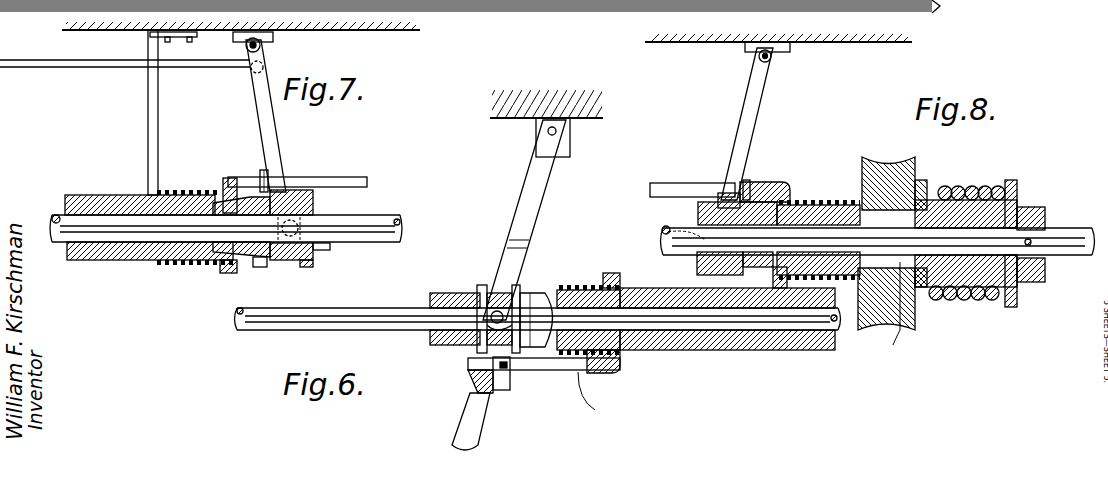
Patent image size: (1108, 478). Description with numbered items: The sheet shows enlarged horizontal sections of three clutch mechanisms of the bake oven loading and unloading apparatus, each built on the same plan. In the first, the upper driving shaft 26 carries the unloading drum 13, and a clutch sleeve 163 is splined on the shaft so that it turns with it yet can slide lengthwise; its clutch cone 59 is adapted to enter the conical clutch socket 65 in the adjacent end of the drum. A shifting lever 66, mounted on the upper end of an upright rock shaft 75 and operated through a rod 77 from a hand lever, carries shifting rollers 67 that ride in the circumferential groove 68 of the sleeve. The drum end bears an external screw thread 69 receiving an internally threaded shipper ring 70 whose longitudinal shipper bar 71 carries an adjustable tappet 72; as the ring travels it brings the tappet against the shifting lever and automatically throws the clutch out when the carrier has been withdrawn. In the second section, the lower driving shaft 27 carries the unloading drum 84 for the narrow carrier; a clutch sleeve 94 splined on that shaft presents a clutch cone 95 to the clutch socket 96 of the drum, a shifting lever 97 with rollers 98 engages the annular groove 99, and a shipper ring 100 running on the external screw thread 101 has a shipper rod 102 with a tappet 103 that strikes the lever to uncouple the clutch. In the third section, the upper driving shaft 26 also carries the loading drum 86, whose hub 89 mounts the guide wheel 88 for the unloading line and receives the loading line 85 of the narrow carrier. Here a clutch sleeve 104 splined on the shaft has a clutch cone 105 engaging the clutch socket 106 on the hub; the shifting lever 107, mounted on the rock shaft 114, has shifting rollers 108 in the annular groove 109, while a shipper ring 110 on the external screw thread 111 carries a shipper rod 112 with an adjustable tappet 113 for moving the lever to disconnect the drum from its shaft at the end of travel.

In FIG. 7, the rod 77 is at (125, 112).
In FIG. 7, the upright rock shaft 75 is at (262, 48).
In FIG. 7, the shifting lever 66 is at (278, 130).
In FIG. 7, the tappet 72 is at (262, 172).
In FIG. 7, the shipper bar 71 is at (368, 183).
In FIG. 7, the unloading drum 13 is at (76, 195).
In FIG. 7, the conical clutch socket 65 is at (213, 210).
In FIG. 7, the circumferential groove 68 is at (296, 198).
In FIG. 7, the clutch sleeve 163 is at (314, 258).
In FIG. 7, the external screw thread 69 is at (178, 265).
In FIG. 7, the shipper ring 70 is at (224, 275).
In FIG. 7, the clutch cone 59 is at (258, 268).
In FIG. 7, the shifting rollers 67 is at (300, 228).
In FIG. 7, the upper driving shaft 26 is at (238, 229).
In FIG. 8, the upper driving shaft 26 is at (663, 229).
In FIG. 6, the shifting lever 97 is at (527, 198).
In FIG. 6, the rollers 98 is at (475, 310).
In FIG. 6, the clutch sleeve 94 is at (480, 292).
In FIG. 6, the annular groove 99 is at (499, 308).
In FIG. 6, the clutch cone 95 is at (549, 296).
In FIG. 6, the clutch socket 96 is at (580, 295).
In FIG. 6, the unloading drum 84 is at (676, 355).
In FIG. 6, the lower driving shaft 27 is at (533, 326).
In FIG. 6, the shipper ring 100 is at (597, 362).
In FIG. 6, the external screw thread 101 is at (585, 368).
In FIG. 6, the shipper rod 102 is at (604, 394).
In FIG. 6, the tappet 103 is at (506, 392).
In FIG. 8, the rock shaft 114 is at (773, 60).
In FIG. 8, the shifting lever 107 is at (752, 88).
In FIG. 8, the tappet 113 is at (745, 185).
In FIG. 8, the shipper rod 112 is at (652, 188).
In FIG. 8, the annular groove 109 is at (722, 200).
In FIG. 8, the clutch cone 105 is at (762, 193).
In FIG. 8, the clutch sleeve 104 is at (700, 212).
In FIG. 8, the clutch socket 106 is at (805, 205).
In FIG. 8, the shipper ring 110 is at (774, 280).
In FIG. 8, the external screw thread 111 is at (815, 276).
In FIG. 8, the shifting rollers 108 is at (662, 235).
In FIG. 8, the guide wheel 88 is at (890, 165).
In FIG. 8, the loading line 85 is at (965, 186).
In FIG. 8, the loading drum 86 is at (970, 300).
In FIG. 8, the hub 89 is at (905, 309).